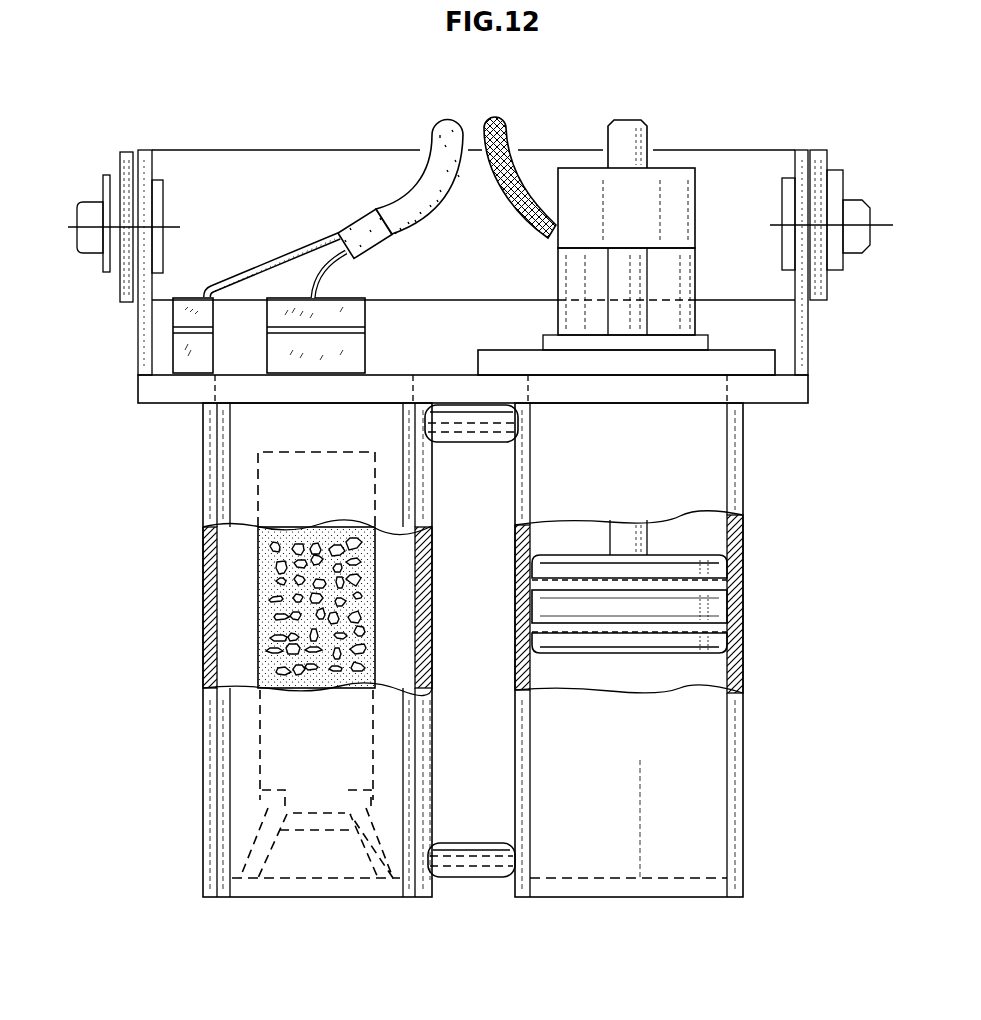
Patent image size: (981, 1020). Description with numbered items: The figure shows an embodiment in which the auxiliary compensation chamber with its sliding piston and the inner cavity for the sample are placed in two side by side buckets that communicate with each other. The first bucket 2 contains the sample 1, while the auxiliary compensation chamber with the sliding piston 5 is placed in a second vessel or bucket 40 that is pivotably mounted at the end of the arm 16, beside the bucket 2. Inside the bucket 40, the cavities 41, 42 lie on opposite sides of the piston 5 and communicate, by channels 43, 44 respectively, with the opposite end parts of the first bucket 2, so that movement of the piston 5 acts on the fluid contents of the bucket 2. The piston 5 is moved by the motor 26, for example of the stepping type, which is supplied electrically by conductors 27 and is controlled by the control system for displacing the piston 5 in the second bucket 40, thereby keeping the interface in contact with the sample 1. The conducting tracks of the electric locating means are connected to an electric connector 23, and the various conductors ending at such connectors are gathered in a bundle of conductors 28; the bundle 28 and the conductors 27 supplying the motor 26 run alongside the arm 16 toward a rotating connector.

The sample 1 is at (275, 625).
The bucket 2 is at (176, 718).
The piston 5 is at (687, 600).
The arm 16 is at (708, 150).
The electric connector 23 is at (185, 305).
The motor 26 is at (690, 314).
The conductors 27 is at (498, 118).
The bundle of conductors 28 is at (447, 118).
The bucket 40 is at (580, 888).
The cavity 41 is at (703, 538).
The cavity 42 is at (690, 675).
The channel 43 is at (475, 428).
The channel 44 is at (472, 858).